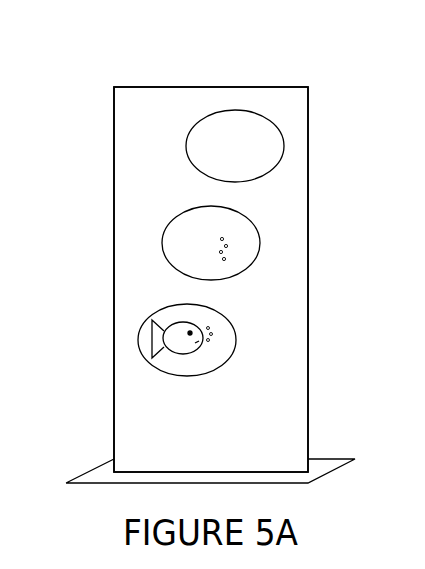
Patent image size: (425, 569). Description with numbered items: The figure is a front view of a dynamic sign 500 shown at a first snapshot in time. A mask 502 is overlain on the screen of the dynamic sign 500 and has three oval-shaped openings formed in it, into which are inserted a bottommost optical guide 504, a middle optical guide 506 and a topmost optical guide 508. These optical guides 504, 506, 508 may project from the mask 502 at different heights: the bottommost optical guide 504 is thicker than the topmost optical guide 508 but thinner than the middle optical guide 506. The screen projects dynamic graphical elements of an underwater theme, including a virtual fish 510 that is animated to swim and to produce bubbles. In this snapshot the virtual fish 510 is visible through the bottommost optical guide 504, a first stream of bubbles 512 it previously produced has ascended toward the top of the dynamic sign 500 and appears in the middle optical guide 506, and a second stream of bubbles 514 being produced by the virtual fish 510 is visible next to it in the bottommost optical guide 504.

The dynamic sign 500 is at (163, 86).
The mask 502 is at (288, 108).
The bottommost optical guide 504 is at (160, 306).
The middle optical guide 506 is at (182, 209).
The topmost optical guide 508 is at (212, 113).
The virtual fish 510 is at (182, 355).
The first stream of bubbles 512 is at (236, 248).
The second stream of bubbles 514 is at (221, 336).